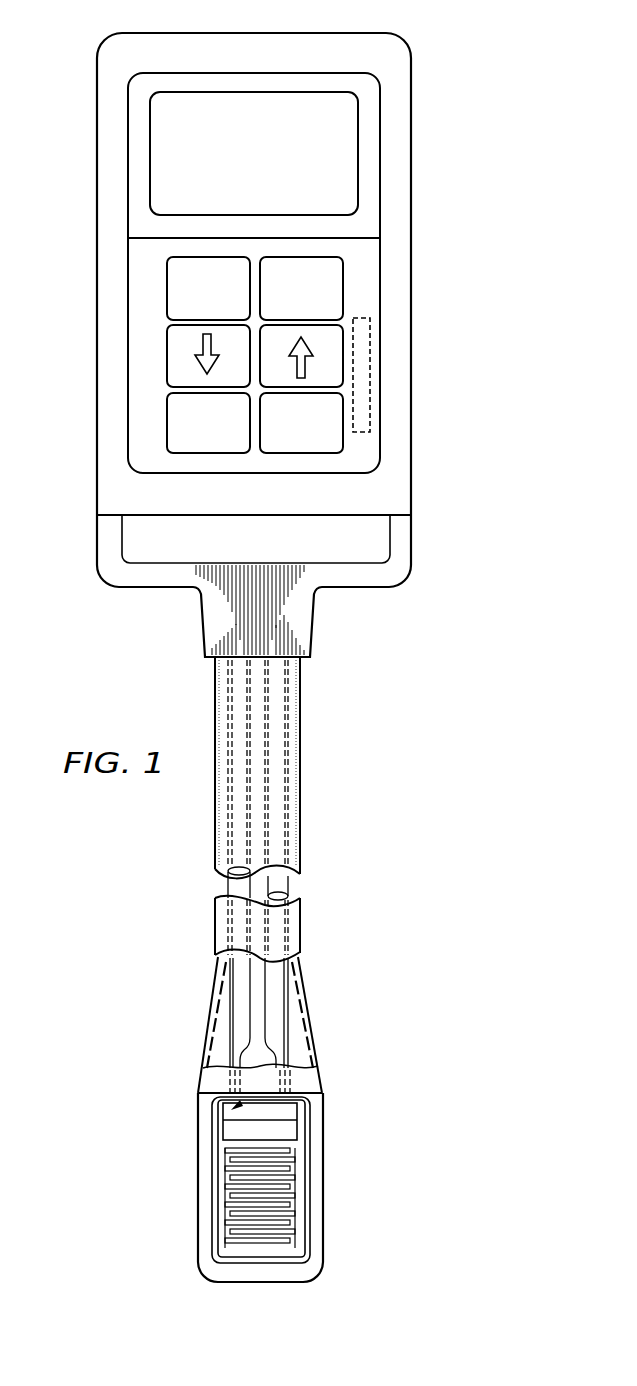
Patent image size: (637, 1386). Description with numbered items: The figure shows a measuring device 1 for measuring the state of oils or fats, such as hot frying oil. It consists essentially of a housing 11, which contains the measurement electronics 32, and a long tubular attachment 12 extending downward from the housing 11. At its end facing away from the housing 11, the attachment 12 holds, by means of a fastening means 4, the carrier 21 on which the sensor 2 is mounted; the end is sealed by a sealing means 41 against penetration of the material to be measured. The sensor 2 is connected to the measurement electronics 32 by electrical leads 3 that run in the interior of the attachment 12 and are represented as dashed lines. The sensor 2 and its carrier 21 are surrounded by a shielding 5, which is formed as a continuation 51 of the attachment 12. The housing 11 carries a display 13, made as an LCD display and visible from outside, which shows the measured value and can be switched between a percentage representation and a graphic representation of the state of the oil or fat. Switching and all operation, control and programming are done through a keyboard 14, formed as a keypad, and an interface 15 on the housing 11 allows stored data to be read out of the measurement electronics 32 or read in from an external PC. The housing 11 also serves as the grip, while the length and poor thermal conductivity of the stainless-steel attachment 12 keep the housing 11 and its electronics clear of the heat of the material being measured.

The measuring device 1 is at (480, 58).
The housing 11 is at (412, 196).
The attachment 12 is at (301, 765).
The display 13 is at (160, 163).
The keyboard 14 is at (175, 355).
The interface 15 is at (371, 390).
The measurement electronics 32 is at (108, 272).
The electrical leads 3 is at (216, 986).
The fastening means 4 is at (230, 1105).
The sealing means 41 is at (288, 1103).
The carrier 21 is at (220, 1178).
The sensor 2 is at (296, 1229).
The shielding 5 is at (198, 1223).
The continuation 51 is at (380, 1186).